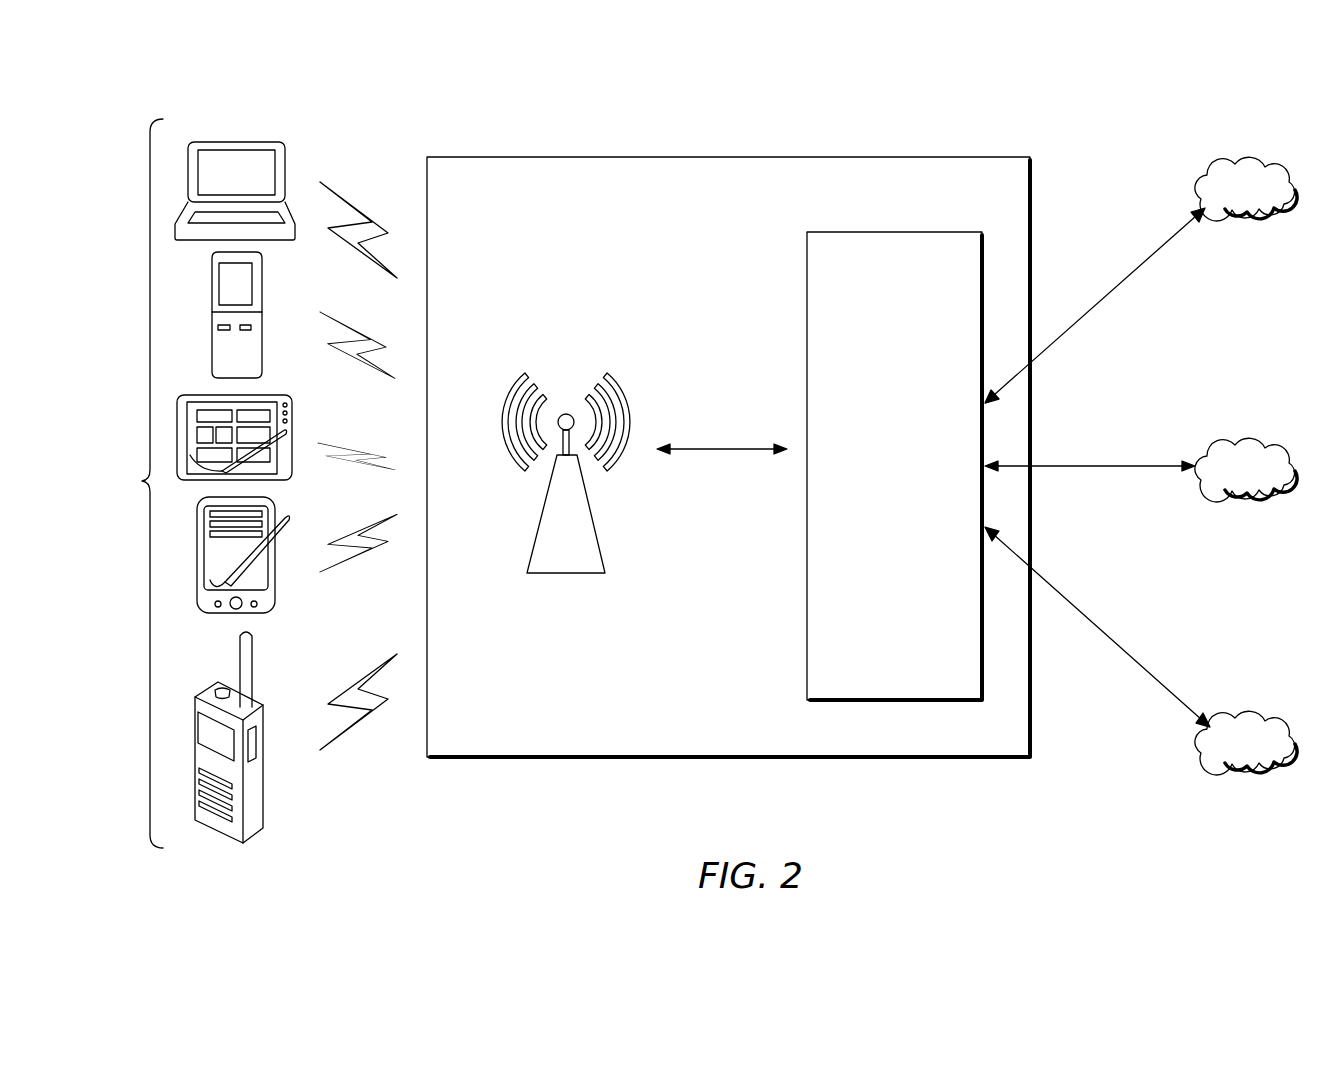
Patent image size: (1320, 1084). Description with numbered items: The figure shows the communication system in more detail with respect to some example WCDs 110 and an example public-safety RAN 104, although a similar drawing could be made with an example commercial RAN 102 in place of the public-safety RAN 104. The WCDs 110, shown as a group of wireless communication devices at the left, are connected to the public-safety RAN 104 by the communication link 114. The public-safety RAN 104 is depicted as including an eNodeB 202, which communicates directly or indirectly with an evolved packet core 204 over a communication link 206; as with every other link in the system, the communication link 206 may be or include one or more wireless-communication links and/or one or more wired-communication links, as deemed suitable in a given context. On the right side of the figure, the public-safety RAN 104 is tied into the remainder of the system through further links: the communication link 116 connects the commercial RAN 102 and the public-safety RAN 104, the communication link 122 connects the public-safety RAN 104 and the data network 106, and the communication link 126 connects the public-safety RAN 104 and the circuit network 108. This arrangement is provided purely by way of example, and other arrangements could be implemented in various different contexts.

The commercial RAN 102 is at (1240, 158).
The public-safety RAN 104 is at (715, 157).
The data network 106 is at (1240, 440).
The circuit network 108 is at (1243, 712).
The WCDs 110 is at (192, 483).
The communication link 114 is at (368, 224).
The communication link 116 is at (1110, 290).
The communication link 122 is at (1113, 466).
The communication link 126 is at (1085, 612).
The eNodeB 202 is at (607, 383).
The evolved packet core 204 is at (895, 232).
The communication link 206 is at (720, 449).